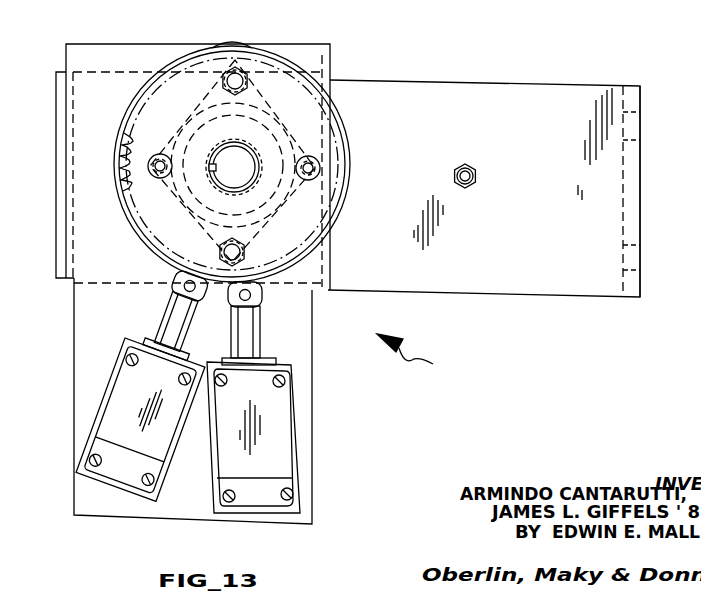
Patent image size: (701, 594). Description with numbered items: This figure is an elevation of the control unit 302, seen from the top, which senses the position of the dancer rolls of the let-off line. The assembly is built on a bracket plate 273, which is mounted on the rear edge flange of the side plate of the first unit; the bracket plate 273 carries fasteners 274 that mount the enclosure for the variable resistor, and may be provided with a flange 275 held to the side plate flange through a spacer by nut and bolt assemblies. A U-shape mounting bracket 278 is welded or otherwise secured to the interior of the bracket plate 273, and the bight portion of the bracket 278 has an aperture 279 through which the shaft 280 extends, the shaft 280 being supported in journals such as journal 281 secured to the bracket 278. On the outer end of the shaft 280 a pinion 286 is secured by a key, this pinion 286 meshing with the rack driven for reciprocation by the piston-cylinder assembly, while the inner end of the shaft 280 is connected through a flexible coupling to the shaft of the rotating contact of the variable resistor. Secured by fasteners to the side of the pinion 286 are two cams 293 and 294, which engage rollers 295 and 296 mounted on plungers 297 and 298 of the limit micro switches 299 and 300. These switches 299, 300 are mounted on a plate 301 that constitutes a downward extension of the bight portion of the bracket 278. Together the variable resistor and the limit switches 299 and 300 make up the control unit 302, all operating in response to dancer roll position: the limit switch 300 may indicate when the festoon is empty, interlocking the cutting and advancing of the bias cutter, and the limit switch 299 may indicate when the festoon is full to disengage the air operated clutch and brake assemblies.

The bracket plate 273 is at (431, 282).
The fasteners 274 is at (468, 186).
The flange 275 is at (642, 214).
The U-shape mounting bracket 278 is at (87, 134).
The aperture 279 is at (243, 142).
The shaft 280 is at (243, 158).
The journal 281 is at (202, 128).
The pinion 286 is at (123, 190).
The cam 293 is at (338, 176).
The cam 294 is at (342, 114).
The roller 295 is at (262, 302).
The roller 296 is at (180, 284).
The plunger 297 is at (264, 342).
The plunger 298 is at (172, 322).
The limit micro switch 299 is at (286, 421).
The limit micro switch 300 is at (118, 402).
The plate 301 is at (300, 361).
The control unit 302 is at (425, 355).